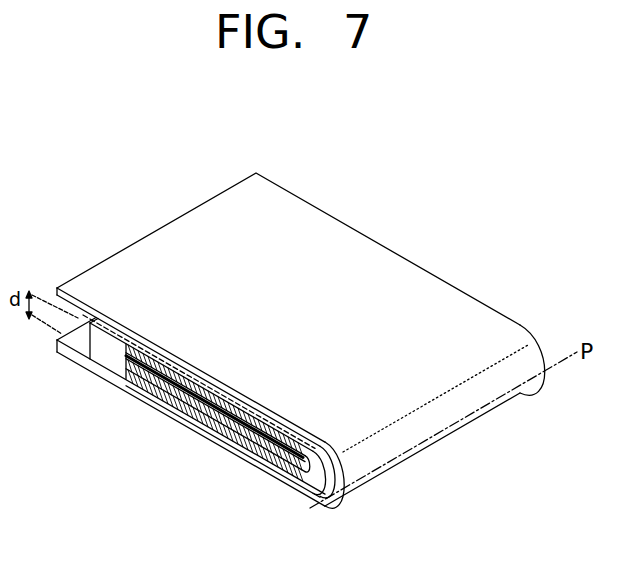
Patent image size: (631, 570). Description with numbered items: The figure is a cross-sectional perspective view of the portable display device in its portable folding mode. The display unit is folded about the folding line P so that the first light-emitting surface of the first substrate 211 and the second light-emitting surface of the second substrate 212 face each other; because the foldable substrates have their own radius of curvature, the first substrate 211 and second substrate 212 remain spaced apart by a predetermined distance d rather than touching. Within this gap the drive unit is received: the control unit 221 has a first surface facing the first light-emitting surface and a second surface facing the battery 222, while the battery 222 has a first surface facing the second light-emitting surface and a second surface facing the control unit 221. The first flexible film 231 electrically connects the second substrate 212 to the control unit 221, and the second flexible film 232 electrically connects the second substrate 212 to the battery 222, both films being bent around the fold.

The first substrate 211 is at (92, 372).
The second substrate 212 is at (131, 258).
The control unit 221 is at (128, 378).
The battery 222 is at (157, 393).
The first flexible film 231 is at (195, 400).
The second flexible film 232 is at (225, 425).